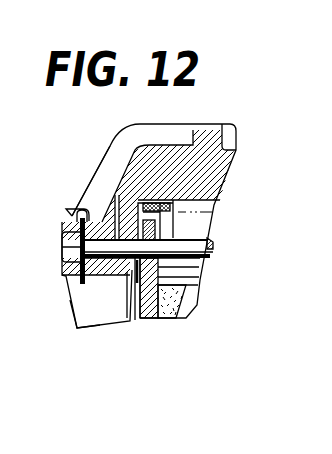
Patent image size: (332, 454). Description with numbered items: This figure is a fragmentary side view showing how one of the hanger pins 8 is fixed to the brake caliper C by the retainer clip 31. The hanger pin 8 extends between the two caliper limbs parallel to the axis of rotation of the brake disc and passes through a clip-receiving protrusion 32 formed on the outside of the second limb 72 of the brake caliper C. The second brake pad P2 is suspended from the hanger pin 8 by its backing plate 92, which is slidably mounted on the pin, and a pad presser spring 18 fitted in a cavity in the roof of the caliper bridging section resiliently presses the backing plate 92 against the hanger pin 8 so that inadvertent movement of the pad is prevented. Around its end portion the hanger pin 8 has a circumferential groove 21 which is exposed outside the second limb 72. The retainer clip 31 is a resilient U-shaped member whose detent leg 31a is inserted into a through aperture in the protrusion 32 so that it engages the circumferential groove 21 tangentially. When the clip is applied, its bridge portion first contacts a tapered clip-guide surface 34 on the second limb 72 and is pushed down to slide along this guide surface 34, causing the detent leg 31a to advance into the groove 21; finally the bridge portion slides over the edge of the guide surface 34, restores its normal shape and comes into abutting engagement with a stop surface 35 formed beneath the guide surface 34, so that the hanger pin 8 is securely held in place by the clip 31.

The pad presser spring 18 is at (148, 225).
The brake caliper C is at (101, 146).
The tapered clip-guide surface 34 is at (95, 165).
The stop surface 35 is at (73, 210).
The circumferential groove 21 is at (119, 219).
The clip-receiving protrusion 32 is at (62, 234).
The hanger pin 8 is at (211, 245).
The detent leg 31a is at (66, 273).
The retainer clip 31 is at (83, 284).
The second limb 72 is at (75, 327).
The backing plate 92 is at (150, 313).
The second brake pad P2 is at (171, 315).